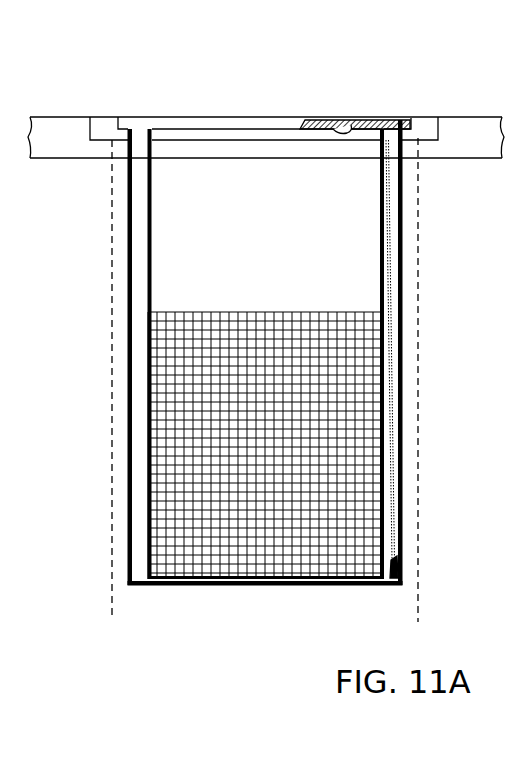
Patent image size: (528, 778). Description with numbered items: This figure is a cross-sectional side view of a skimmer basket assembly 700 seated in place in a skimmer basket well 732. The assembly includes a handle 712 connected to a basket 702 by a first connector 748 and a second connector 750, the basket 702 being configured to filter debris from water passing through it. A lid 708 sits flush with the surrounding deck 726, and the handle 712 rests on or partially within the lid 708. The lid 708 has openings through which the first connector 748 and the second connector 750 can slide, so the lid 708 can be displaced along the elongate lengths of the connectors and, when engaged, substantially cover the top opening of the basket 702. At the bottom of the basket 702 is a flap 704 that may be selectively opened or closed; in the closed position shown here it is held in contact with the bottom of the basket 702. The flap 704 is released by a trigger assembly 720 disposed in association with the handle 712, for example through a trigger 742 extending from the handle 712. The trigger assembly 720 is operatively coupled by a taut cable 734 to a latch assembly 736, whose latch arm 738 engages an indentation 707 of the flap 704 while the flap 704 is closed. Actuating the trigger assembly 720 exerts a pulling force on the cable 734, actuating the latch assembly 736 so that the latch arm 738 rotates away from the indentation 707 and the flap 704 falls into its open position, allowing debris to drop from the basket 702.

The skimmer basket assembly 700 is at (97, 84).
The basket 702 is at (213, 422).
The flap 704 is at (250, 583).
The indentation 707 is at (388, 582).
The lid 708 is at (422, 130).
The handle 712 is at (250, 118).
The trigger assembly 720 is at (350, 105).
The deck 726 is at (60, 140).
The skimmer basket well 732 is at (118, 472).
The cable 734 is at (390, 430).
The latch assembly 736 is at (409, 565).
The latch arm 738 is at (398, 568).
The trigger 742 is at (343, 134).
The first connector 748 is at (407, 262).
The second connector 750 is at (96, 257).